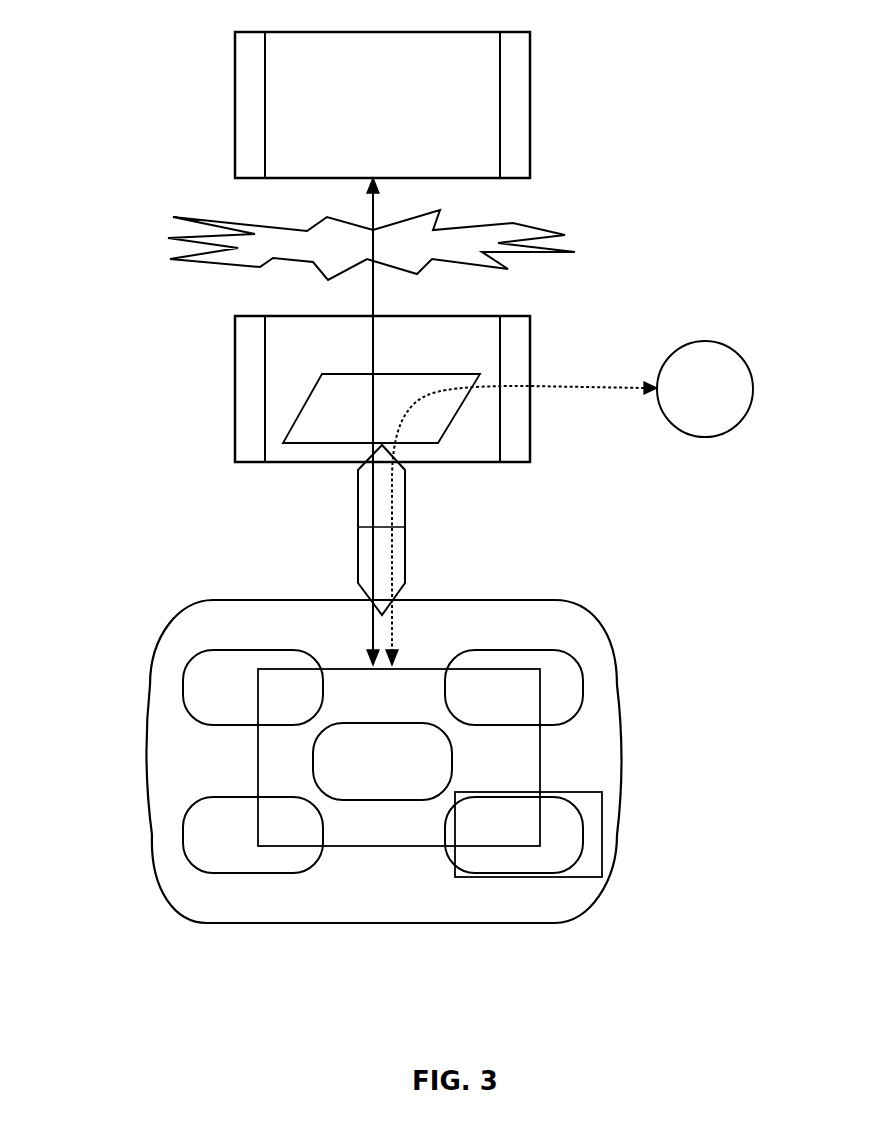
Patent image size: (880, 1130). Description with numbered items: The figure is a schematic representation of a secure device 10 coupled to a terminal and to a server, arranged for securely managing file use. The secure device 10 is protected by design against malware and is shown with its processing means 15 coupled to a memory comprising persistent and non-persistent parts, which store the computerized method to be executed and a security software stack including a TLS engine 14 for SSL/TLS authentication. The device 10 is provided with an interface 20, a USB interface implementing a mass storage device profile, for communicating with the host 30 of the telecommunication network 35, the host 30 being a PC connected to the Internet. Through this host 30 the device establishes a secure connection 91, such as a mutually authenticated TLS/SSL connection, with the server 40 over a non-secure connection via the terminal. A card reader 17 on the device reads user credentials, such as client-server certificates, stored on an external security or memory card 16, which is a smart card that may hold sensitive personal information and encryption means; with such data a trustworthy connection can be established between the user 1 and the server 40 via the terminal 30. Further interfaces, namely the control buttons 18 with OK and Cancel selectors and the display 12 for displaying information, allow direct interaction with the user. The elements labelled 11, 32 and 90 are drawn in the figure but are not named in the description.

The user 1 is at (707, 410).
The secure device 10 is at (327, 925).
The memory area 11 is at (215, 860).
The display 12 is at (215, 722).
The TLS engine 14 is at (437, 797).
The processing means 15 is at (387, 845).
The security or memory card 16 is at (583, 825).
The card reader 17 is at (595, 875).
The control buttons 18 is at (585, 703).
The interface 20 is at (372, 558).
The host 30 is at (262, 386).
The proxy application 32 is at (300, 430).
The telecommunication network 35 is at (433, 230).
The server 40 is at (262, 163).
The communication link 90 is at (595, 388).
The secure connection 91 is at (372, 287).